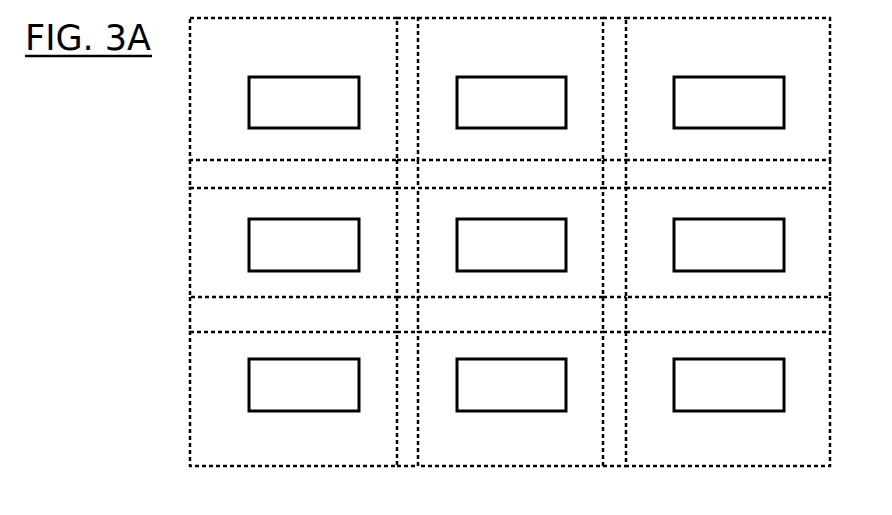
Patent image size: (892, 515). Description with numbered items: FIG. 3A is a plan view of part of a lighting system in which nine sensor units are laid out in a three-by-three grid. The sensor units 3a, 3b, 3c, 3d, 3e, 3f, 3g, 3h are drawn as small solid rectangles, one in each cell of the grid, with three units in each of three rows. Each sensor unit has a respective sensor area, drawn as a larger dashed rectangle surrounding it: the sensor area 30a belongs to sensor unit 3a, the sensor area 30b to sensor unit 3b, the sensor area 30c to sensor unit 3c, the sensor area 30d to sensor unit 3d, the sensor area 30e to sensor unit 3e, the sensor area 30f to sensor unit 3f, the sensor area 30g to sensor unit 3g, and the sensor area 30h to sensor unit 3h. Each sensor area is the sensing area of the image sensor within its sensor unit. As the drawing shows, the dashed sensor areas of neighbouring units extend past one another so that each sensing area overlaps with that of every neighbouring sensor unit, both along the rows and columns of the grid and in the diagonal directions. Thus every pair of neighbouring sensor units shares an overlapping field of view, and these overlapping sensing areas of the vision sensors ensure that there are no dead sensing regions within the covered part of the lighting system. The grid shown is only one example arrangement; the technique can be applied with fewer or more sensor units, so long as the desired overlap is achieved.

The sensor area 30a is at (190, 140).
The sensor area 30b is at (397, 140).
The sensor area 30c is at (603, 140).
The sensor area 30d is at (397, 279).
The sensor area 30e is at (628, 277).
The sensor area 30f is at (190, 433).
The sensor area 30g is at (397, 433).
The sensor area 30h is at (628, 432).
The sensor unit 3a is at (304, 102).
The sensor unit 3b is at (511, 102).
The sensor unit 3c is at (516, 174).
The sensor unit 3d is at (511, 245).
The sensor unit 3e is at (729, 245).
The sensor unit 3f is at (304, 385).
The sensor unit 3g is at (511, 385).
The sensor unit 3h is at (729, 385).